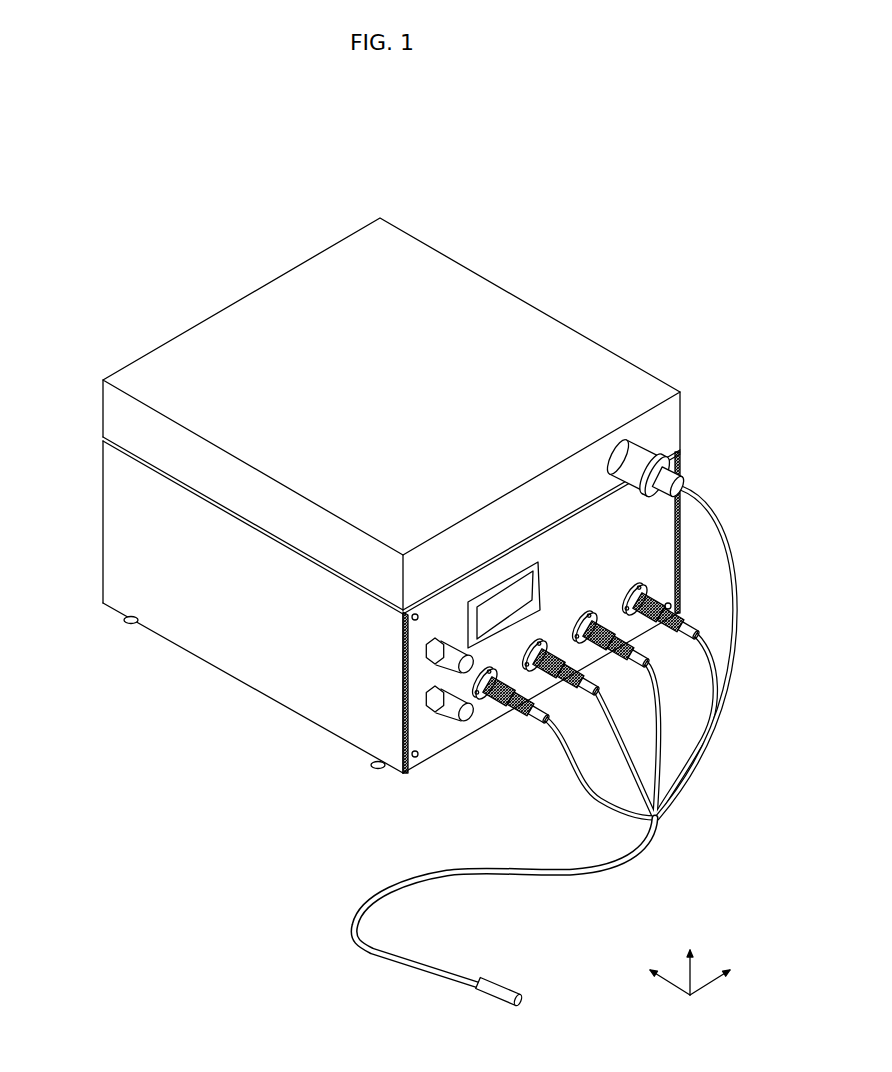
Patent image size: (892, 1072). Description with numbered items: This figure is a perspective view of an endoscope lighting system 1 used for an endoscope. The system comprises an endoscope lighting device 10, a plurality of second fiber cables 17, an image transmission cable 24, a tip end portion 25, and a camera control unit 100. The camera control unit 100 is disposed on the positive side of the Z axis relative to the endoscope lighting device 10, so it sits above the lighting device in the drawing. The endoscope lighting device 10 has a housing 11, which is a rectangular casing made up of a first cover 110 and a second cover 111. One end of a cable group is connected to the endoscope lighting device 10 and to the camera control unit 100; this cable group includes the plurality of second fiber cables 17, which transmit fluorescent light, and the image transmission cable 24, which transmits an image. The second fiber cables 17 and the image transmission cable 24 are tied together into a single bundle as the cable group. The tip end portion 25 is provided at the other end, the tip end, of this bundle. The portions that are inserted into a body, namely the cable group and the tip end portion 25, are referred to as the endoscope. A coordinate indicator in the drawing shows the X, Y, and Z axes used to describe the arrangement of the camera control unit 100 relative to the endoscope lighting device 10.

The endoscope lighting system 1 is at (632, 253).
The endoscope lighting device 10 is at (102, 533).
The camera control unit 100 is at (102, 408).
The housing 11 is at (296, 775).
The first cover 110 is at (430, 735).
The second cover 111 is at (350, 718).
The second fiber cables 17 is at (560, 740).
The image transmission cable 24 is at (700, 497).
The tip end portion 25 is at (503, 985).